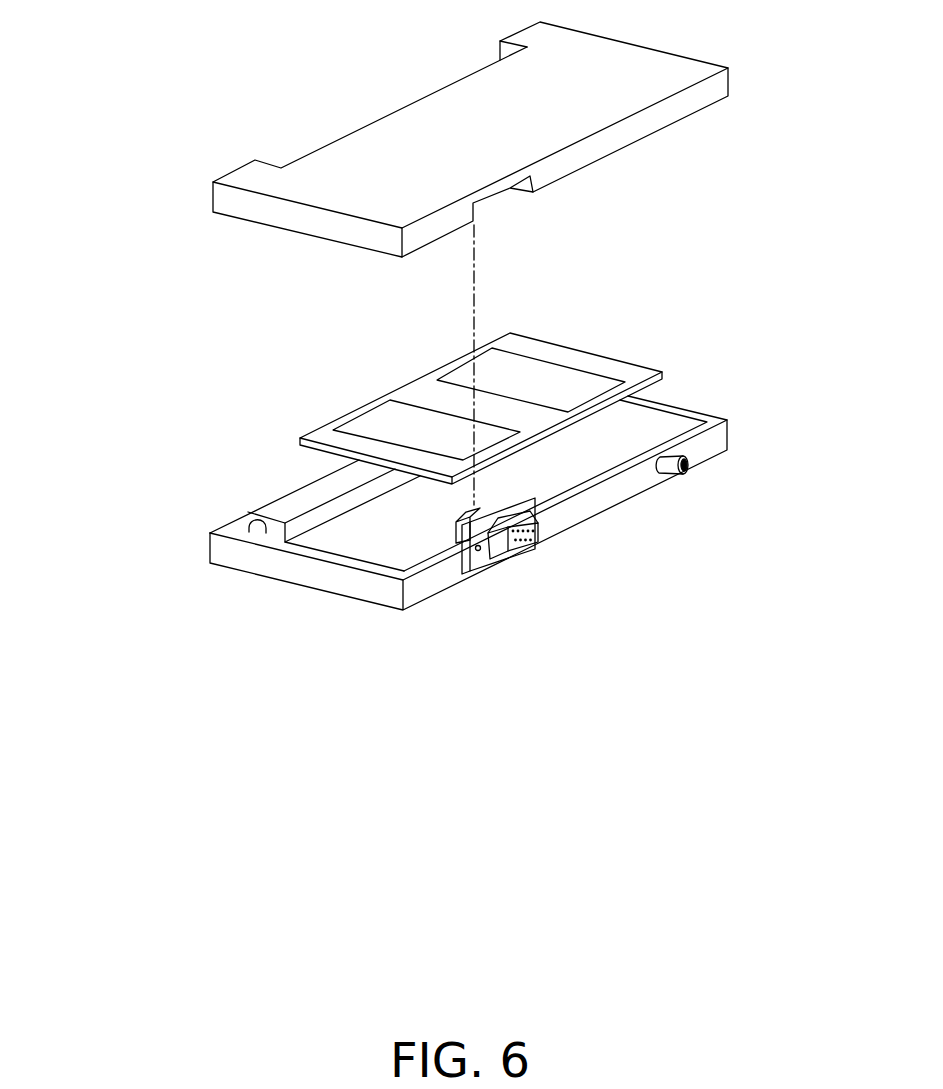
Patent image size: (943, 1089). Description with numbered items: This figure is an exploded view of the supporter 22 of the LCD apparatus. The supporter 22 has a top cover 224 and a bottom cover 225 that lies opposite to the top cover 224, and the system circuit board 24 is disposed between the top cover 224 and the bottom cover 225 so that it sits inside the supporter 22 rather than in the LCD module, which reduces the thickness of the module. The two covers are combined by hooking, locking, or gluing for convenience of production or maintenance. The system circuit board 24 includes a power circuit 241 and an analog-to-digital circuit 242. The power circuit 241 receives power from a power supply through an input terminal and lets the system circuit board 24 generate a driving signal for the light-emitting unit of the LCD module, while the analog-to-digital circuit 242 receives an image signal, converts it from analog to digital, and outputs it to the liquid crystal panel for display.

The supporter 22 is at (383, 360).
The top cover 224 is at (257, 212).
The bottom cover 225 is at (441, 547).
The system circuit board 24 is at (642, 371).
The power circuit 241 is at (472, 437).
The analog-to-digital circuit 242 is at (590, 387).